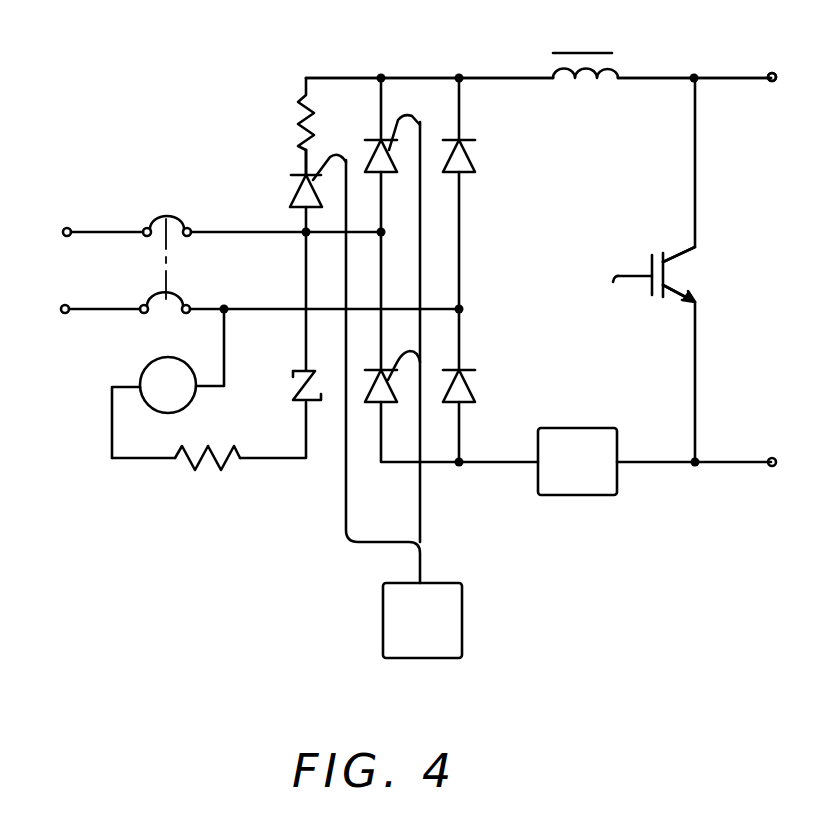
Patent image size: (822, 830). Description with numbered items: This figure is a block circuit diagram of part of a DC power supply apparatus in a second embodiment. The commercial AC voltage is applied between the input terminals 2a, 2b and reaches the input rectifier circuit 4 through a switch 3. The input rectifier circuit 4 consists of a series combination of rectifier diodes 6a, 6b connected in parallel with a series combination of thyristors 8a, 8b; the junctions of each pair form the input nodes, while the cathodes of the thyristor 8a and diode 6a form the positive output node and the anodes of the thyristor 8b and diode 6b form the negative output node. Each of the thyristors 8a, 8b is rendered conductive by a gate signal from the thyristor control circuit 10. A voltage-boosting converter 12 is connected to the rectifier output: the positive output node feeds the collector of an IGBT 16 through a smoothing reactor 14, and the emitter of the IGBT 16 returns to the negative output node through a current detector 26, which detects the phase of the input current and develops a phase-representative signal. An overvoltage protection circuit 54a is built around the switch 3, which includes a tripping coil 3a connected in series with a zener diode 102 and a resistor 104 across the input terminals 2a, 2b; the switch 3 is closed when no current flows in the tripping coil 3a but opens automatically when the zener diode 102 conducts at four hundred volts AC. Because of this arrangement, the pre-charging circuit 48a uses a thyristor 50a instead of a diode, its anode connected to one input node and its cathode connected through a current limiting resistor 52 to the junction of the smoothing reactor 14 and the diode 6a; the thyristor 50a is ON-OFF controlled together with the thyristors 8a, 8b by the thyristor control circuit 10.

The input terminal 2a is at (63, 230).
The input terminal 2b is at (65, 318).
The switch 3 is at (190, 221).
The tripping coil 3a is at (165, 400).
The input rectifier circuit 4 is at (392, 66).
The rectifier diode 6a is at (472, 160).
The rectifier diode 6b is at (468, 390).
The thyristor 8a is at (395, 162).
The thyristor 8b is at (392, 405).
The thyristor control circuit 10 is at (462, 608).
The voltage-boosting converter 12 is at (712, 53).
The smoothing reactor 14 is at (590, 88).
The IGBT 16 is at (673, 272).
The current detector 26 is at (590, 497).
The pre-charging circuit 48a is at (245, 124).
The thyristor 50a is at (289, 199).
The current limiting resistor 52 is at (298, 125).
The overvoltage protection circuit 54a is at (162, 189).
The zener diode 102 is at (312, 410).
The resistor 104 is at (204, 470).